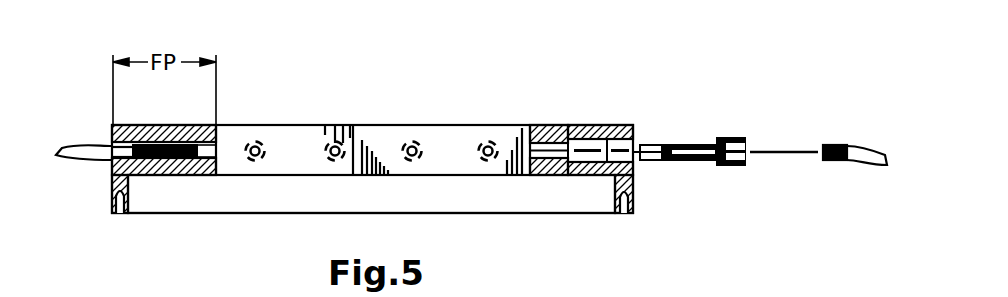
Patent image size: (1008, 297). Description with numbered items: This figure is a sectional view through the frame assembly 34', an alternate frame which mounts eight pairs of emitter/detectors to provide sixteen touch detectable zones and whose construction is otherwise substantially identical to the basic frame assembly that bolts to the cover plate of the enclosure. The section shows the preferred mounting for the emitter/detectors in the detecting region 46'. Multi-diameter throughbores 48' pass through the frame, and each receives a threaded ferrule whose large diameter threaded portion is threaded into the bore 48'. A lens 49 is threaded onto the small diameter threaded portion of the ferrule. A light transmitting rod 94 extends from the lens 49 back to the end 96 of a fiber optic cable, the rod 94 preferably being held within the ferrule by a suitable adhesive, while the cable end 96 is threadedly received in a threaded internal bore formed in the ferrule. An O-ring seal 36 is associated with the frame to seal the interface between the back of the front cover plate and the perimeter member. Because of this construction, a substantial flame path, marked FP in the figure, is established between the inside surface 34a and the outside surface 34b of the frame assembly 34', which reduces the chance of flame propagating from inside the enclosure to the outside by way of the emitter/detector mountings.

The inside surface 34a is at (112, 133).
The outside surface 34b is at (216, 131).
The detecting region 46' is at (409, 114).
The lens 49 is at (408, 143).
The multi-diameter throughbore 48' is at (444, 110).
The O-ring seal 36 is at (537, 127).
The frame assembly 34' is at (581, 110).
The light transmitting rod 94 is at (779, 150).
The end of fiber optic cable 96 is at (836, 145).